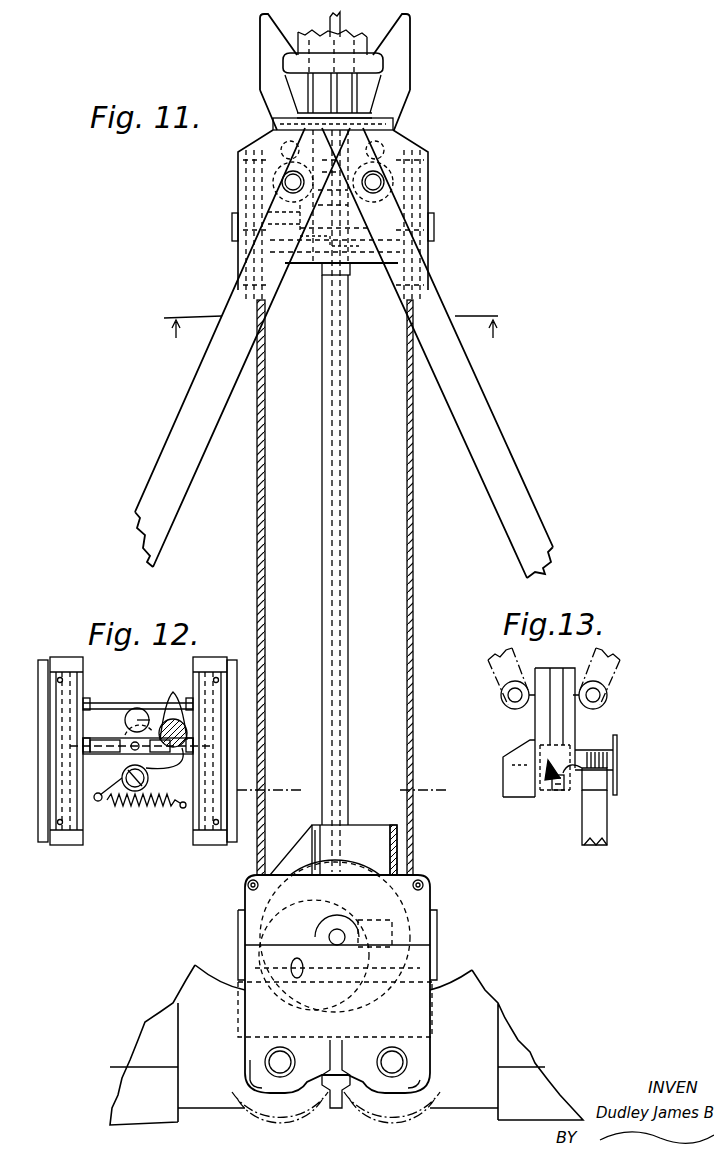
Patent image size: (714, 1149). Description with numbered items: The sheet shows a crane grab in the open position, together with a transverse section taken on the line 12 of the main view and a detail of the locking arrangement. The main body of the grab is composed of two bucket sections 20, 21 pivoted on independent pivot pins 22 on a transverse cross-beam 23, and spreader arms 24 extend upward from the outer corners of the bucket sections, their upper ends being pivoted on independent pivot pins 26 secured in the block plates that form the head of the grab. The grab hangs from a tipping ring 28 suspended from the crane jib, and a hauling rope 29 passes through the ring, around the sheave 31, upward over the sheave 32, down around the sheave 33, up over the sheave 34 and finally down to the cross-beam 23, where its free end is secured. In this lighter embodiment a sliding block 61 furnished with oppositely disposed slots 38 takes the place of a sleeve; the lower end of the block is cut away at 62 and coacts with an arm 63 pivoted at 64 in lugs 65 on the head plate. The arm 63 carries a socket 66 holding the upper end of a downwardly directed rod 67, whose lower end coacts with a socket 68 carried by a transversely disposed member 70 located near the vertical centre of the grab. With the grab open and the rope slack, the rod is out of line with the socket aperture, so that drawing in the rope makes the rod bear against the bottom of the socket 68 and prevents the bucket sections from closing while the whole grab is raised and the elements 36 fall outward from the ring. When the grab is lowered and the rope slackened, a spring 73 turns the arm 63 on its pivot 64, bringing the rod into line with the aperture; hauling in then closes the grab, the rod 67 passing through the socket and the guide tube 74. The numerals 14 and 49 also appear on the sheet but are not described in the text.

In FIG. 11, the section line 12 is at (332, 321).
In FIG. 11, the section line 14- 14 is at (341, 778).
In FIG. 11, the bucket section 20 is at (148, 1050).
In FIG. 11, the bucket section 21 is at (532, 1093).
In FIG. 11, the pivot pin 22 is at (392, 1062).
In FIG. 11, the cross-beam 23 is at (437, 915).
In FIG. 11, the spreader arm 24 is at (185, 428).
In FIG. 11, the pivot pin 26 is at (283, 183).
In FIG. 11, the tipping ring 28 is at (362, 40).
In FIG. 11, the hauling rope 29 is at (296, 33).
In FIG. 11, the sheave 31 is at (247, 916).
In FIG. 11, the sheave 32 is at (248, 268).
In FIG. 12, the sheave 32 is at (60, 680).
In FIG. 11, the sheave 33 is at (402, 892).
In FIG. 11, the sheave 34 is at (428, 268).
In FIG. 12, the sheave 34 is at (216, 680).
In FIG. 11, the element 36 is at (283, 58).
In FIG. 13, the slot 38 is at (545, 715).
In FIG. 11, the shaft 49 is at (330, 937).
In FIG. 11, the sliding block 61 is at (345, 140).
In FIG. 13, the sliding block 61 is at (547, 733).
In FIG. 13, the cut-away portion 62 is at (533, 788).
In FIG. 11, the arm 63 is at (352, 272).
In FIG. 12, the arm 63 is at (173, 730).
In FIG. 13, the arm 63 is at (557, 777).
In FIG. 12, the pivot 64 is at (128, 806).
In FIG. 13, the pivot 64 is at (557, 790).
In FIG. 11, the lug 65 is at (266, 212).
In FIG. 12, the lug 65 is at (90, 748).
In FIG. 11, the socket 66 is at (320, 270).
In FIG. 13, the socket 66 is at (600, 772).
In FIG. 11, the rod 67 is at (348, 523).
In FIG. 12, the rod 67 is at (136, 720).
In FIG. 13, the rod 67 is at (592, 823).
In FIG. 11, the socket 68 is at (372, 835).
In FIG. 11, the transversely disposed member 70 is at (248, 900).
In FIG. 11, the spring 73 is at (435, 217).
In FIG. 12, the spring 73 is at (130, 792).
In FIG. 11, the guide tube 74 is at (400, 928).